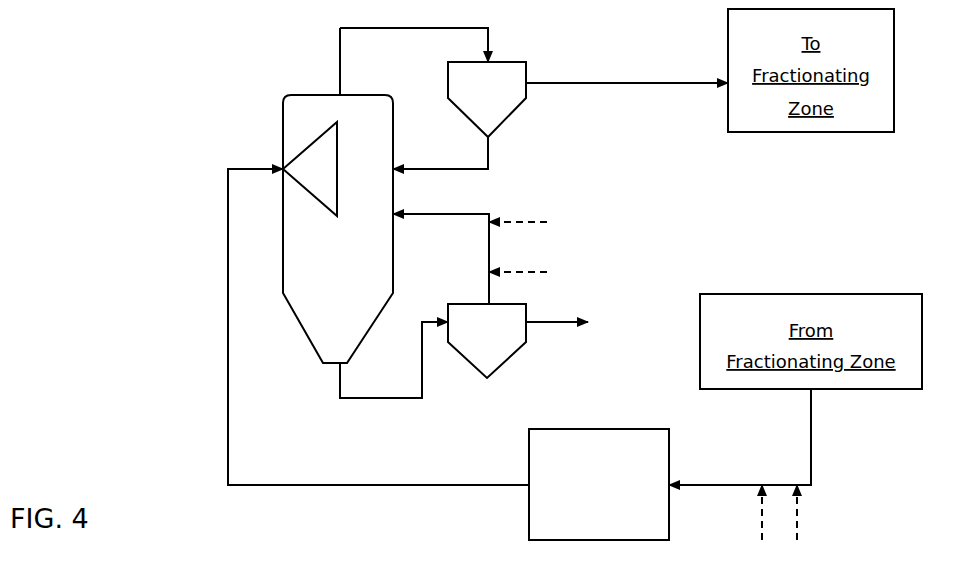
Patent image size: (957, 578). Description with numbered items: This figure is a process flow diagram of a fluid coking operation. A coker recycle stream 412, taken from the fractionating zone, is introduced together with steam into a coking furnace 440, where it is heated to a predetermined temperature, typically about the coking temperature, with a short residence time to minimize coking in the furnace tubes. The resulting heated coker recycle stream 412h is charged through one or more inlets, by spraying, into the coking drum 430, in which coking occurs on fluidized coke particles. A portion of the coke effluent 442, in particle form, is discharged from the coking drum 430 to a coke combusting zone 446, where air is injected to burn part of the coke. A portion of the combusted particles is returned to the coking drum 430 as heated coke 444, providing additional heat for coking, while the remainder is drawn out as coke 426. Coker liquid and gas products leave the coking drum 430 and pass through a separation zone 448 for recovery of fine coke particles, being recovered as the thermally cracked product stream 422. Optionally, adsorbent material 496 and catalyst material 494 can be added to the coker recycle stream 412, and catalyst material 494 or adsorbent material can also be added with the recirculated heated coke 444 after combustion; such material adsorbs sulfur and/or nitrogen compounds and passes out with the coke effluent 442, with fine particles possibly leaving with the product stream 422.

The coking drum 430 is at (338, 195).
The separation zone 448 is at (433, 98).
The coke combusting zone 446 is at (487, 341).
The coking furnace 440 is at (599, 484).
The thermally cracked product stream 422 is at (683, 81).
The heated coke 444 is at (446, 216).
The coke effluent 442 is at (365, 400).
The coke 426 is at (544, 325).
The coker recycle stream 412 is at (811, 427).
The heated coker recycle stream 412h is at (360, 487).
The catalyst material 494 is at (530, 255).
The adsorbent material 496 is at (530, 205).